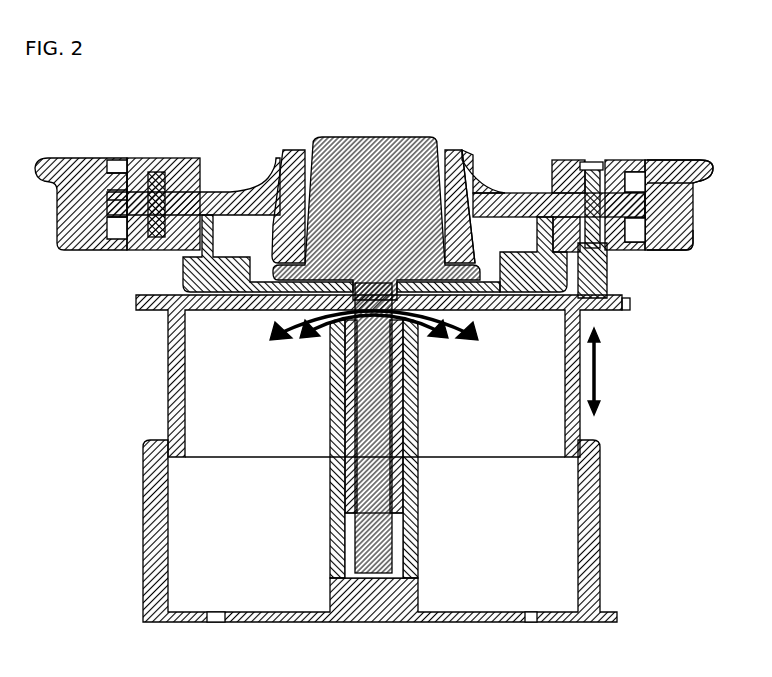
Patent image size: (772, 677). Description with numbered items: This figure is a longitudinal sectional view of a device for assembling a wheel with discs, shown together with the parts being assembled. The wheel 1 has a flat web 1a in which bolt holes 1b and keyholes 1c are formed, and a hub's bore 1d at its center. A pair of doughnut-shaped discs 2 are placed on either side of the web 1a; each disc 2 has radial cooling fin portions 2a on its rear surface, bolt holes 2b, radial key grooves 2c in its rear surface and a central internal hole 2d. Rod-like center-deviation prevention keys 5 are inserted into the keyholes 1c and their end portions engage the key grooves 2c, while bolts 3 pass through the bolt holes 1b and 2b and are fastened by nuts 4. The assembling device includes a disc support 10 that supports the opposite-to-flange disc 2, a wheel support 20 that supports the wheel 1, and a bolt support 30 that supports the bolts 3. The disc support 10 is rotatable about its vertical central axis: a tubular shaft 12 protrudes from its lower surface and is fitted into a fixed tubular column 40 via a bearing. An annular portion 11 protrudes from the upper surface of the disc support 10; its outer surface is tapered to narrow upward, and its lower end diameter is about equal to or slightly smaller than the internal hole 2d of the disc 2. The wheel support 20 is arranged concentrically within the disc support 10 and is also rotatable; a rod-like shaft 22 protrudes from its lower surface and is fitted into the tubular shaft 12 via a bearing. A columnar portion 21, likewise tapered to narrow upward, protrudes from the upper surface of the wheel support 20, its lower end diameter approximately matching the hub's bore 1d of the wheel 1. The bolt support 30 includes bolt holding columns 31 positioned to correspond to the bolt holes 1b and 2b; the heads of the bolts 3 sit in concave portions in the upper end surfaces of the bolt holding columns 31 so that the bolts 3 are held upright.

The wheel 1 is at (693, 222).
The web 1a is at (210, 191).
The bolt hole 1b is at (575, 187).
The keyhole 1c is at (133, 188).
The hub's bore 1d is at (447, 150).
The disc 2 is at (652, 161).
The cooling fin portion 2a is at (712, 178).
The bolt hole 2b is at (622, 163).
The key groove 2c is at (187, 162).
The internal hole 2d is at (534, 225).
The bolt 3 is at (593, 163).
The nut 4 is at (583, 166).
The center-deviation prevention key 5 is at (163, 180).
The disc support 10 is at (493, 203).
The annular portion 11 is at (520, 254).
The tubular shaft 12 is at (405, 467).
The wheel support 20 is at (284, 150).
The columnar portion 21 is at (340, 137).
The rod-like shaft 22 is at (392, 540).
The bolt support 30 is at (613, 312).
The bolt holding column 31 is at (624, 300).
The fixed tubular column 40 is at (418, 493).